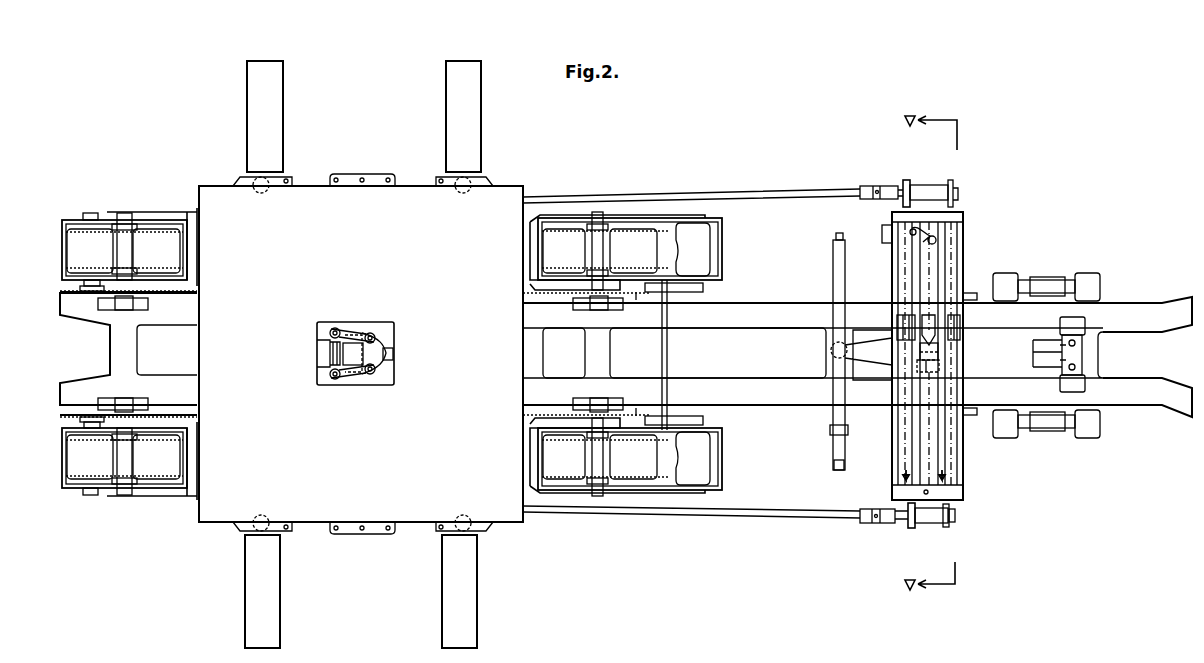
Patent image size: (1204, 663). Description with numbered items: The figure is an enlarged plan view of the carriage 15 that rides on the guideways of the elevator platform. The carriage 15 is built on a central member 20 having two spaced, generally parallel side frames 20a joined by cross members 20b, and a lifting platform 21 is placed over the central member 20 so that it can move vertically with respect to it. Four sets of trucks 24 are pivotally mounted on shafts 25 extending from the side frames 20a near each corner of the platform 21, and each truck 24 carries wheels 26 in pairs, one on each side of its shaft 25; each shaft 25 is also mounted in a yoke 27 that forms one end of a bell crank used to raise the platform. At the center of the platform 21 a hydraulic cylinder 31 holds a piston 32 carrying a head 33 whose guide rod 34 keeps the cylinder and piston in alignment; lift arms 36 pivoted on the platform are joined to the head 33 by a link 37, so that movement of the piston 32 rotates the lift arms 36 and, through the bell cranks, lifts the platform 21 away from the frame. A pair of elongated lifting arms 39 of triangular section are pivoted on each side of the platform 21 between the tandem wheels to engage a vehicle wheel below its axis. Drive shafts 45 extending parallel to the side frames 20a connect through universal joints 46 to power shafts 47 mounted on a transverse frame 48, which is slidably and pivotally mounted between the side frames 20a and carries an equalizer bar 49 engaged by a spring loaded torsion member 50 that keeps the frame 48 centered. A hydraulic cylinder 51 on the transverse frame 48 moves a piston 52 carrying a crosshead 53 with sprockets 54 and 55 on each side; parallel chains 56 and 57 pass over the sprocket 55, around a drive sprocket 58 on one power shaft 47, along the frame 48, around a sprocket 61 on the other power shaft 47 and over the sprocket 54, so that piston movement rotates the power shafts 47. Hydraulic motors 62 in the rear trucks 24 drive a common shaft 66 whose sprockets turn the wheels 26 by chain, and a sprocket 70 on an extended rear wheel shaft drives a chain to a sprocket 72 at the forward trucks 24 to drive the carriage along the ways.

The carriage 15 is at (768, 320).
The central member 20 is at (625, 362).
The side frames 20a is at (857, 355).
The cross members 20b is at (106, 353).
The lifting platform 21 is at (367, 260).
The trucks 24 is at (64, 222).
The shafts 25 is at (125, 240).
The wheels 26 is at (101, 260).
The yoke 27 is at (168, 196).
The hydraulic cylinder 31 is at (322, 355).
The piston 32 is at (336, 347).
The head 33 is at (378, 345).
The guide rod 34 is at (389, 360).
The lift arms 36 is at (338, 324).
The link 37 is at (352, 331).
The lifting arms 39 is at (472, 86).
The drive shafts 45 is at (794, 196).
The universal joints 46 is at (876, 186).
The power shafts 47 is at (905, 181).
The transverse frame 48 is at (963, 496).
The equalizer bar 49 is at (872, 372).
The spring loaded torsion member 50 is at (834, 422).
The hydraulic cylinder 51 is at (928, 456).
The piston 52 is at (935, 347).
The crosshead 53 is at (936, 359).
The sprocket 54 is at (900, 316).
The sprocket 55 is at (930, 312).
The chain 56 is at (947, 440).
The chain 57 is at (905, 426).
The drive sprocket 58 is at (932, 528).
The sprocket 61 is at (926, 185).
The hydraulic motors 62 is at (702, 248).
The common shaft 66 is at (672, 350).
The sprocket 70 is at (636, 298).
The sprocket 72 is at (80, 287).